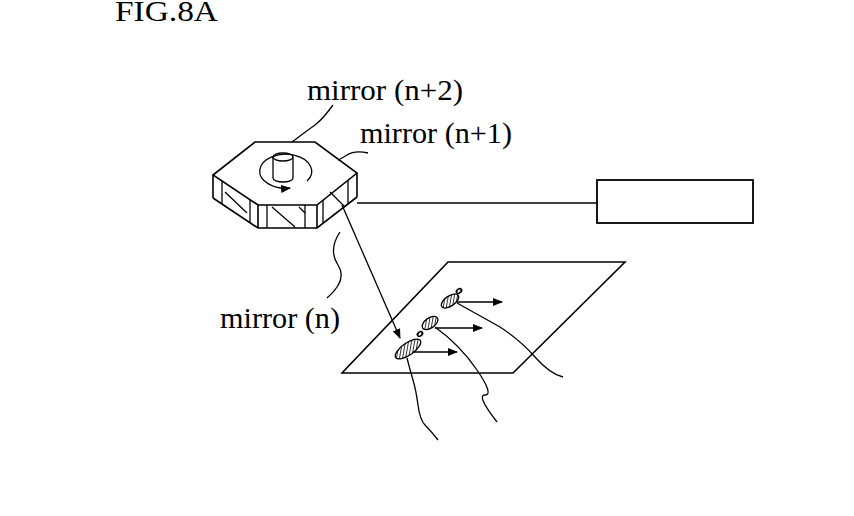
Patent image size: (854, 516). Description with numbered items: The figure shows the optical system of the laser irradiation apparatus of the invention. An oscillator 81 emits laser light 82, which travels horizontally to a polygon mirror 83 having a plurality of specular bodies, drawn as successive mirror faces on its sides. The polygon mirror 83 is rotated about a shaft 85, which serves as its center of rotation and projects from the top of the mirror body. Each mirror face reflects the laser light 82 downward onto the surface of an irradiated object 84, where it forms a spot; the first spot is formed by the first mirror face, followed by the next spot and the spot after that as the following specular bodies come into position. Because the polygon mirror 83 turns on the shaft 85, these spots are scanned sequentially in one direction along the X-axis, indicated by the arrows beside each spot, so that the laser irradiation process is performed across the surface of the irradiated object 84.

The oscillator 81 is at (667, 183).
The laser light 82 is at (512, 190).
The polygon mirror 83 is at (243, 232).
The irradiated object 84 is at (597, 280).
The shaft 85 is at (277, 153).